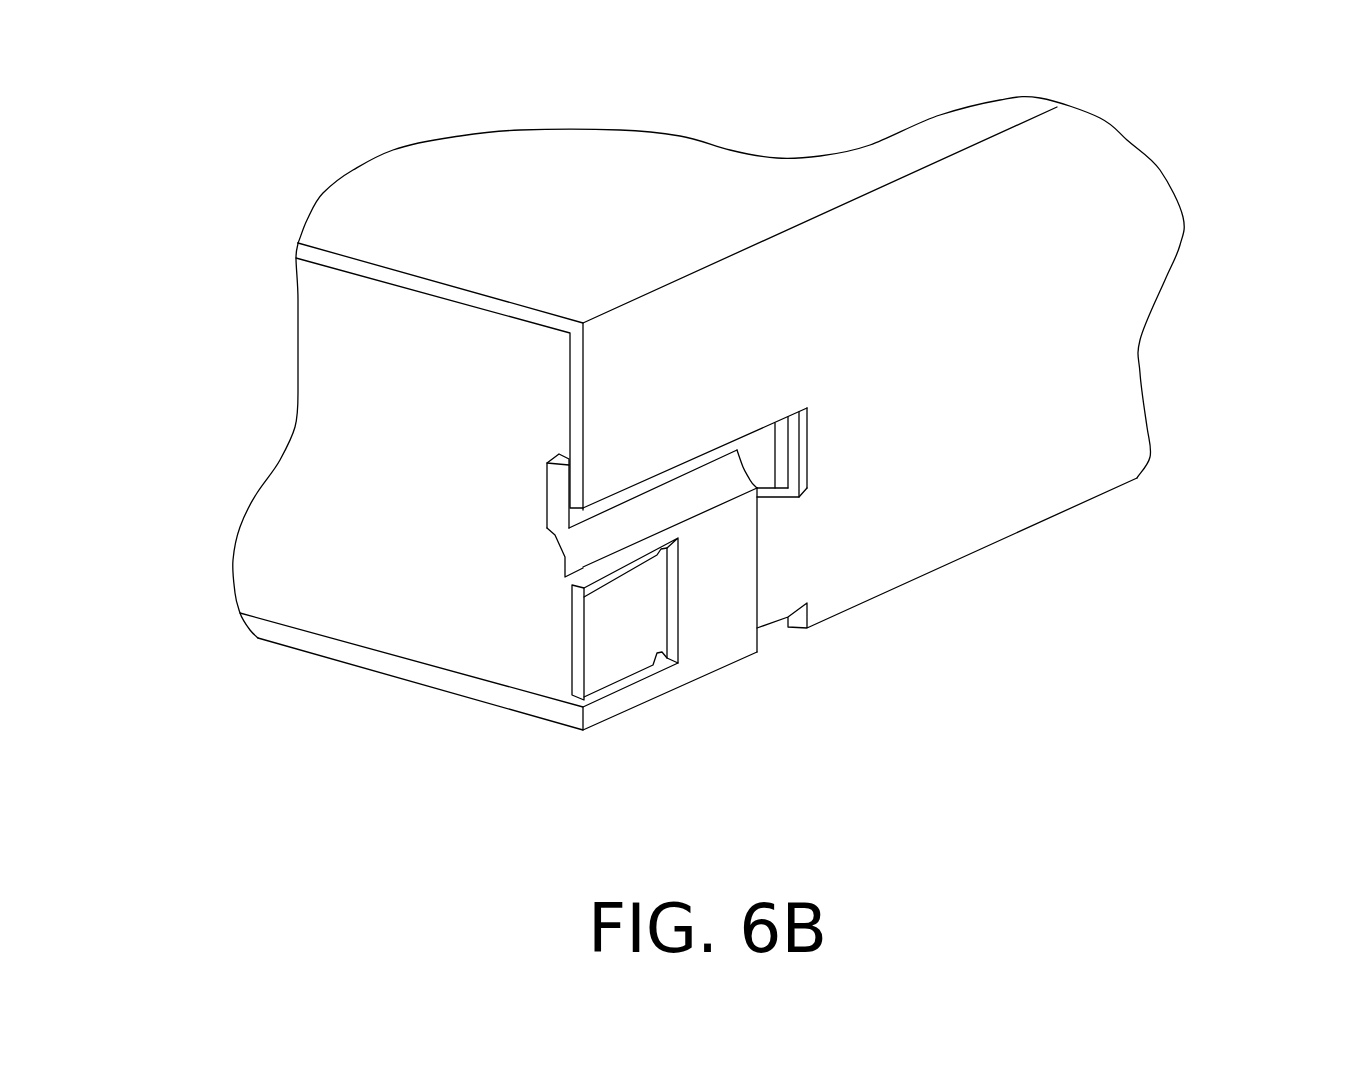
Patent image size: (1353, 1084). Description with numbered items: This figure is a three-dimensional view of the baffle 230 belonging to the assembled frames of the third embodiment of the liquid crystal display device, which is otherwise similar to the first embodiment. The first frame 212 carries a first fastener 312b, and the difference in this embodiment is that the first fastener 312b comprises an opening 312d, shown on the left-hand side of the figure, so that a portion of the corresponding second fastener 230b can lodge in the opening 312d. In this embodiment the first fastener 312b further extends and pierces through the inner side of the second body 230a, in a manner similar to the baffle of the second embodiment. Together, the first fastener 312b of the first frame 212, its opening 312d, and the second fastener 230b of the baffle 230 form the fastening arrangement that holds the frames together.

The baffle 230 is at (1095, 177).
The first frame 212 is at (262, 626).
The second body 230a is at (910, 537).
The second fastener 230b is at (645, 604).
The first fastener 312b is at (598, 547).
The opening 312d is at (629, 681).